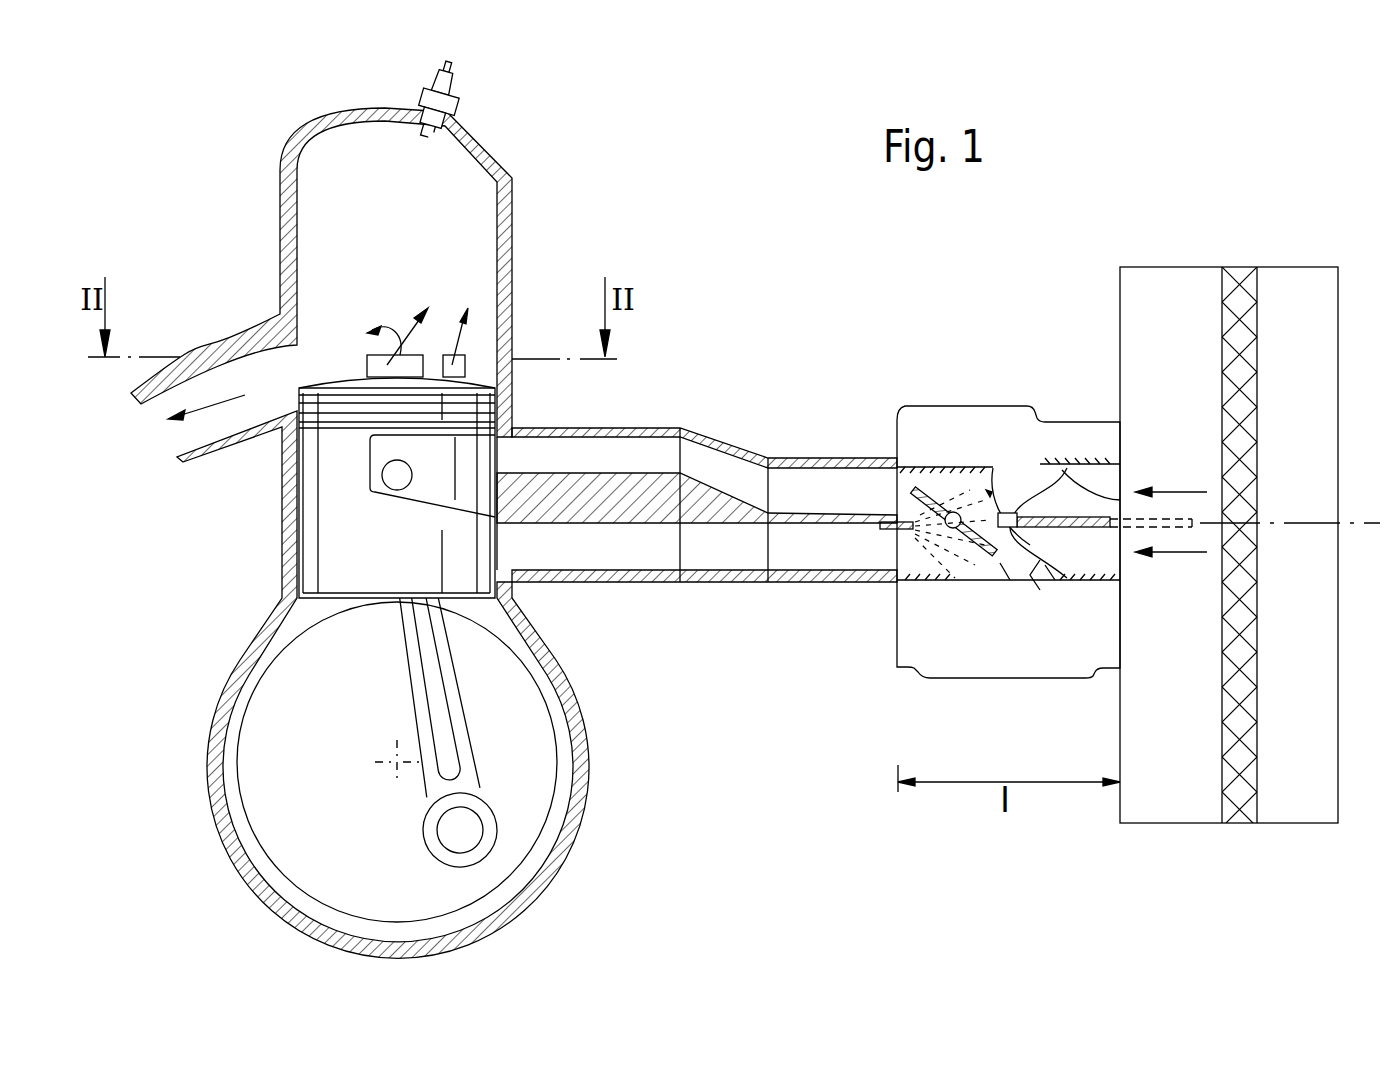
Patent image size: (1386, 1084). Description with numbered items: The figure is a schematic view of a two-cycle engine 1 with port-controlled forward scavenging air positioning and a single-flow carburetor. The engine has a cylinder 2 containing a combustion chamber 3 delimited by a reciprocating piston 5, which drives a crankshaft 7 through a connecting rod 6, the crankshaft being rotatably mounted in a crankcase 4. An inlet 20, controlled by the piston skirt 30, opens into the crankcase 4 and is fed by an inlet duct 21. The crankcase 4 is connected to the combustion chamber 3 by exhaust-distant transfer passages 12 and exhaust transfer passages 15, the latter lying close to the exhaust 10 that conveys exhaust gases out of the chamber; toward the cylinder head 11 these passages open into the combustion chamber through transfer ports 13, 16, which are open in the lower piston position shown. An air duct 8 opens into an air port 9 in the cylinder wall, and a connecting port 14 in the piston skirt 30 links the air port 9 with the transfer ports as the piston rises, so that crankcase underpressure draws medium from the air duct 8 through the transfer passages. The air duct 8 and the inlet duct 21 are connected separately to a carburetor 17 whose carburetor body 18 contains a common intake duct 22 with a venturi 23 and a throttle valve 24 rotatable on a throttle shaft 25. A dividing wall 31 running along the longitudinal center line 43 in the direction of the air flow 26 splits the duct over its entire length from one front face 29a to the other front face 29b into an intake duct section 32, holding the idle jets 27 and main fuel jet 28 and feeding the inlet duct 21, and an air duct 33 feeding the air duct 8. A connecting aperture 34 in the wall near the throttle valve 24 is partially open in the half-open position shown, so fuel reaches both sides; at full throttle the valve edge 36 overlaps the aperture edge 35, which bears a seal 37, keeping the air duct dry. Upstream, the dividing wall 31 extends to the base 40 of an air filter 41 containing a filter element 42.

The two-cycle engine 1 is at (205, 258).
The cylinder 2 is at (280, 193).
The combustion chamber 3 is at (474, 211).
The crankcase 4 is at (560, 845).
The piston 5 is at (330, 522).
The connecting rod 6 is at (453, 713).
The crankshaft 7 is at (390, 764).
The air duct 8 is at (558, 453).
The air port 9 is at (518, 452).
The exhaust 10 is at (168, 447).
The cylinder head 11 is at (382, 106).
The exhaust-distant transfer passage 12 is at (460, 370).
The transfer port 13 is at (450, 365).
The connecting port 14 is at (442, 483).
The exhaust transfer passage 15 is at (367, 366).
The transfer port 16 is at (373, 353).
The carburetor 17 is at (945, 648).
The carburetor body 18 is at (990, 405).
The inlet 20 is at (500, 543).
The inlet duct 21 is at (670, 560).
The common intake duct 22 is at (1100, 498).
The venturi 23 is at (1045, 470).
The throttle valve 24 is at (948, 490).
The throttle shaft 25 is at (990, 490).
The air flow 26 is at (1183, 553).
The idle jet 27 is at (965, 590).
The main fuel jet 28 is at (1040, 590).
The front face 29a is at (1120, 645).
The front face 29b is at (893, 640).
The piston skirt 30 is at (310, 568).
The dividing wall 31 is at (1120, 482).
The intake duct section 32 is at (928, 540).
The air duct 33 is at (940, 505).
The connecting aperture 34 is at (1035, 456).
The aperture edge 35 is at (1078, 472).
The valve edge 36 is at (920, 485).
The seal 37 is at (895, 478).
The air filter base 40 is at (1120, 745).
The air filter 41 is at (1277, 483).
The filter element 42 is at (1250, 310).
The longitudinal center line 43 is at (1355, 523).